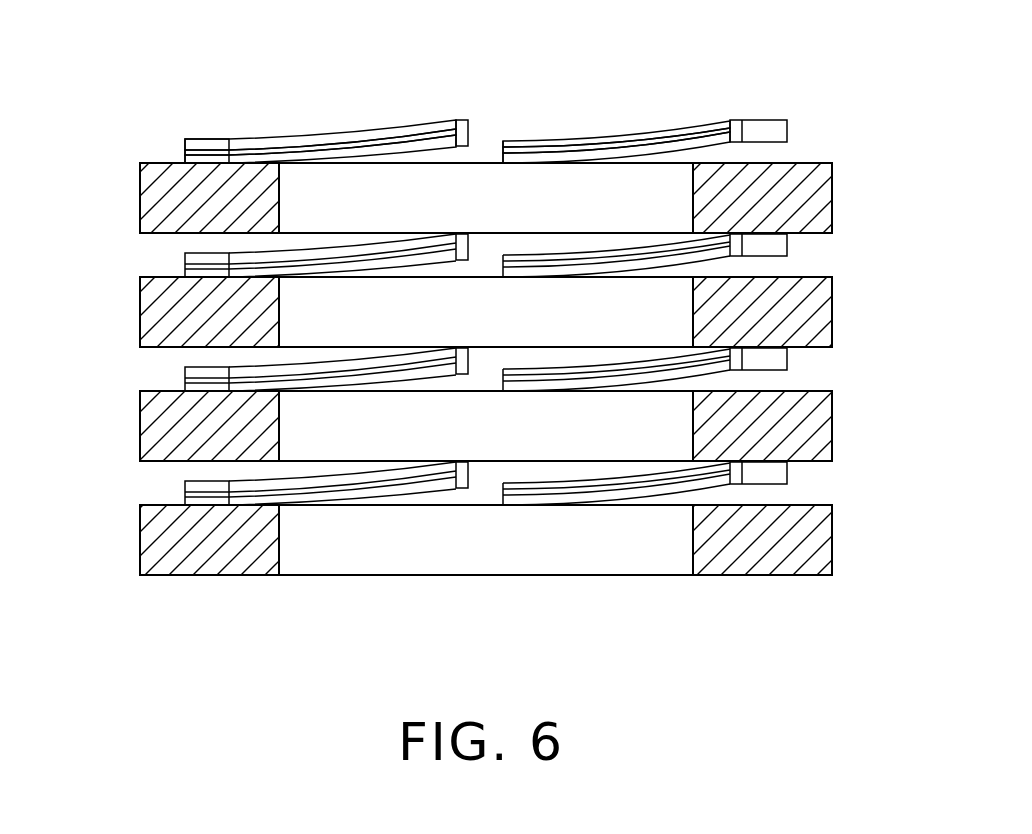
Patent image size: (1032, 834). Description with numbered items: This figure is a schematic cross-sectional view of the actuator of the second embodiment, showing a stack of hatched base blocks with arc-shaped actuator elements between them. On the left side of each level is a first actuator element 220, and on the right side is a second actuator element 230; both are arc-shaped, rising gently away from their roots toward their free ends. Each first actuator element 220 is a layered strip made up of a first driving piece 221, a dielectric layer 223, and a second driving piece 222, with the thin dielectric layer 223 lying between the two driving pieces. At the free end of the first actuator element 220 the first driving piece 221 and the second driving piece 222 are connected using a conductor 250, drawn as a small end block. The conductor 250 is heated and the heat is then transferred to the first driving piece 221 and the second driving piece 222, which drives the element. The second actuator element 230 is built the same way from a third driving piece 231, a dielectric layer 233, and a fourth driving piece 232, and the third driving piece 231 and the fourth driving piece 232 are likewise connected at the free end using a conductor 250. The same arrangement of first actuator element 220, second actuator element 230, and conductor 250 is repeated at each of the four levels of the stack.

The first actuator element 220 is at (240, 121).
The first driving piece 221 is at (197, 160).
The second driving piece 222 is at (203, 145).
The dielectric layer 223 is at (195, 152).
The second actuator element 230 is at (616, 91).
The third driving piece 231 is at (530, 162).
The fourth driving piece 232 is at (708, 130).
The dielectric layer 233 is at (682, 143).
The conductor 250 is at (458, 122).